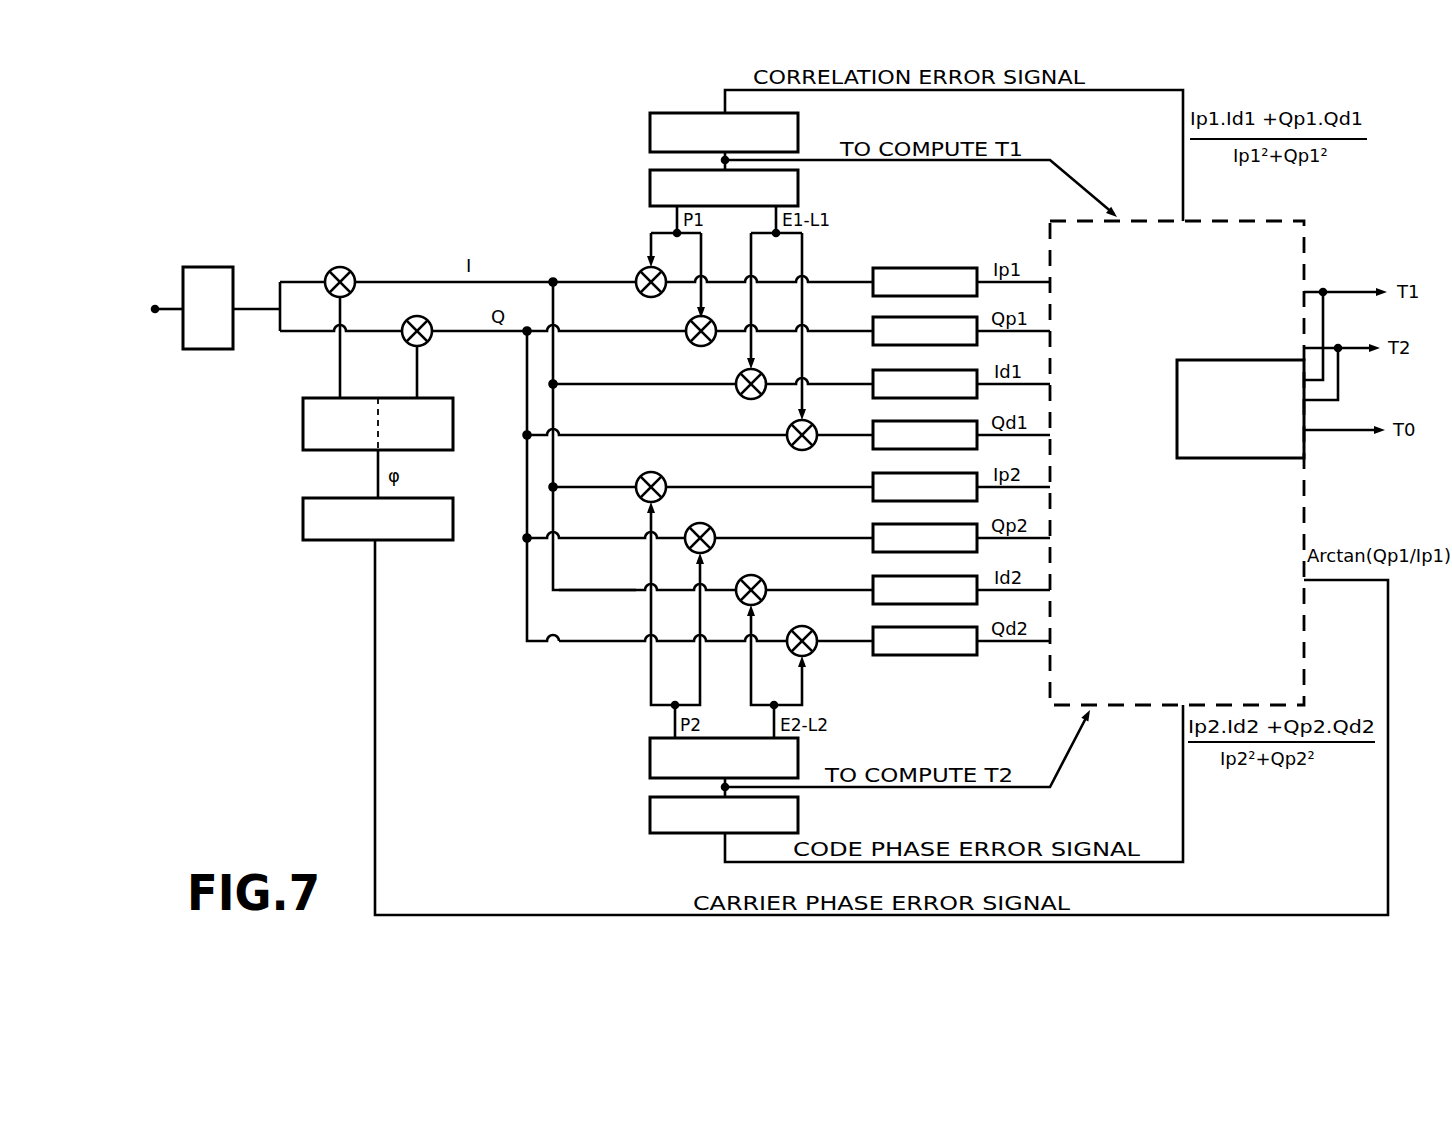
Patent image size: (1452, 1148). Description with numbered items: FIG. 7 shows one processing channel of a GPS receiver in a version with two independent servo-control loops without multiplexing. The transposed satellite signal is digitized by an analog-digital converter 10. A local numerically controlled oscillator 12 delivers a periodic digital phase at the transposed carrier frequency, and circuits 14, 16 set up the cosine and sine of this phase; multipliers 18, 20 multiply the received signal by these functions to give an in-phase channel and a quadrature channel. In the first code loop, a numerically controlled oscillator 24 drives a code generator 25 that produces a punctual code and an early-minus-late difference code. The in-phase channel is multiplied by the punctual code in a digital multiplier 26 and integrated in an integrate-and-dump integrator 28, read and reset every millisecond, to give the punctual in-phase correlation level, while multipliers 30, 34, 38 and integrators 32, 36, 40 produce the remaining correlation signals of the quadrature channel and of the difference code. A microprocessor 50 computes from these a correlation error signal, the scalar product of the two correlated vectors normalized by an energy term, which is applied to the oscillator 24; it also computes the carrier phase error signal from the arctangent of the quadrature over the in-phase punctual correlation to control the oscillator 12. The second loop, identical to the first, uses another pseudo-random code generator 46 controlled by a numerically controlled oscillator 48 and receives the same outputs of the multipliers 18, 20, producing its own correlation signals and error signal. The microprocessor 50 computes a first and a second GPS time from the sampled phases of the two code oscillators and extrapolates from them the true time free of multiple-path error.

The analog-digital converter 10 is at (210, 267).
The numerically controlled oscillator 12 is at (303, 522).
The cosine circuit 14 is at (303, 420).
The sine circuit 16 is at (453, 428).
The multiplier 18 is at (351, 271).
The multiplier 20 is at (428, 320).
The numerically controlled oscillator 24 is at (650, 130).
The code generator 25 is at (650, 186).
The digital multiplier 26 is at (638, 270).
The integrator 28 is at (905, 268).
The multiplier 30 is at (688, 326).
The integrator 32 is at (873, 320).
The multiplier 34 is at (738, 376).
The integrator 36 is at (873, 372).
The multiplier 38 is at (790, 428).
The integrator 40 is at (873, 424).
The pseudo-random code generator 46 is at (650, 744).
The numerically controlled oscillator 48 is at (650, 816).
The microprocessor 50 is at (1258, 221).